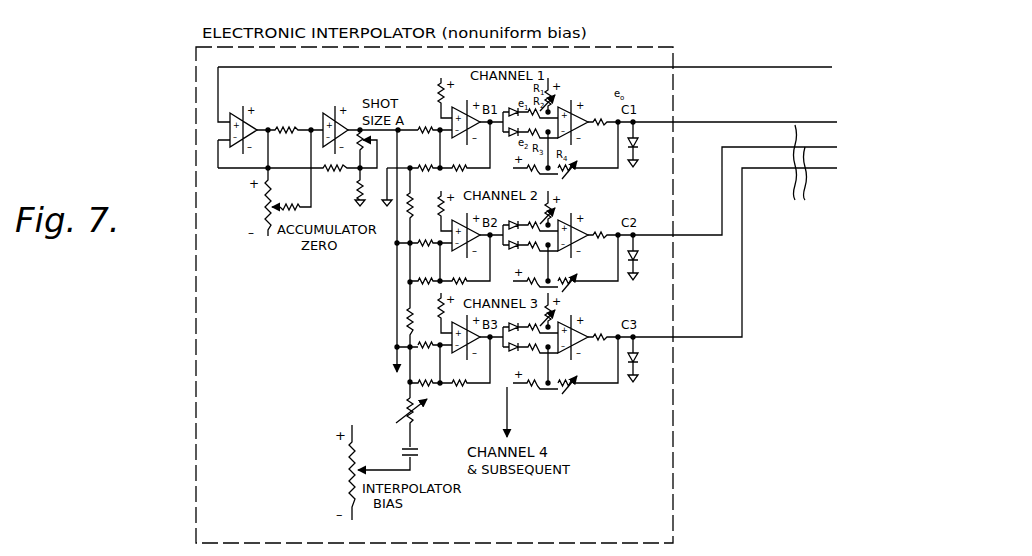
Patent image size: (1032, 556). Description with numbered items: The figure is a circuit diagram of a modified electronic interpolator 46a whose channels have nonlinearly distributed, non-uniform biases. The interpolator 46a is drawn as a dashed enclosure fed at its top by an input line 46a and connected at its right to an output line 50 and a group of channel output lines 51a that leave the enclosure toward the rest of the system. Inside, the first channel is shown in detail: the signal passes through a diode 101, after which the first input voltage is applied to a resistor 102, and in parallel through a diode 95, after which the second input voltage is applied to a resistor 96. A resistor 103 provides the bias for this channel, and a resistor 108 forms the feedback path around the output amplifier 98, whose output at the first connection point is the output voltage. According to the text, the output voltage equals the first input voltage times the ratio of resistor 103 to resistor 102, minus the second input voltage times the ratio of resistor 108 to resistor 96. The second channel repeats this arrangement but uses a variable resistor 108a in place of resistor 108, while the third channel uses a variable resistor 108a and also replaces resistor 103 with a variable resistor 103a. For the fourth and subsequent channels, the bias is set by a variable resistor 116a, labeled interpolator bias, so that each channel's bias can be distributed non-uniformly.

The electronic interpolator 46a is at (194, 63).
The output line 50 is at (780, 68).
The channel output lines 51a is at (735, 229).
The diode 95 is at (512, 136).
The resistor 96 is at (525, 124).
The operational amplifier 98 is at (578, 114).
The diode 101 is at (511, 108).
The resistor 102 is at (545, 124).
The resistor 103 is at (556, 93).
The variable resistor 103a is at (558, 310).
The resistor 108 is at (575, 168).
The variable resistor 108a is at (589, 339).
The variable resistor 116a is at (413, 423).